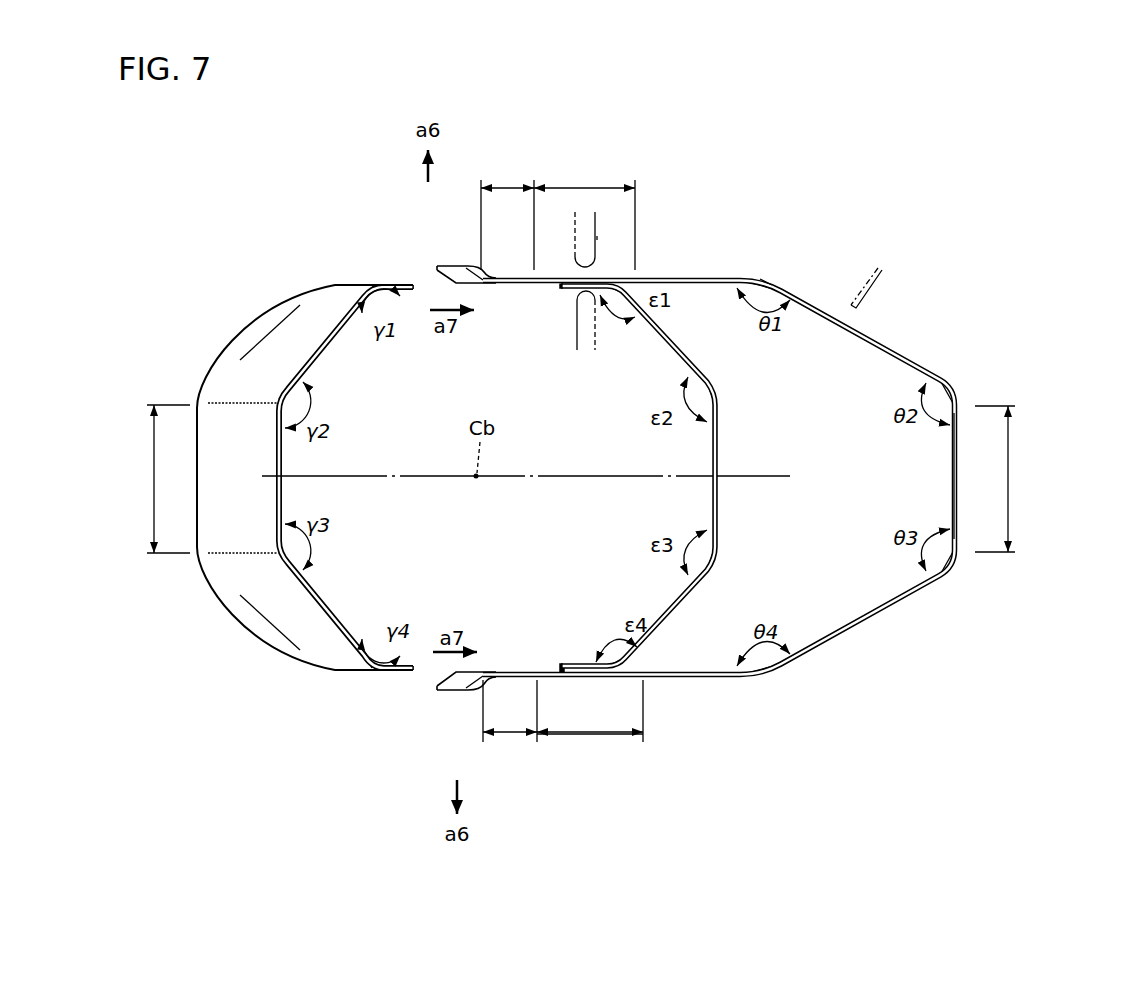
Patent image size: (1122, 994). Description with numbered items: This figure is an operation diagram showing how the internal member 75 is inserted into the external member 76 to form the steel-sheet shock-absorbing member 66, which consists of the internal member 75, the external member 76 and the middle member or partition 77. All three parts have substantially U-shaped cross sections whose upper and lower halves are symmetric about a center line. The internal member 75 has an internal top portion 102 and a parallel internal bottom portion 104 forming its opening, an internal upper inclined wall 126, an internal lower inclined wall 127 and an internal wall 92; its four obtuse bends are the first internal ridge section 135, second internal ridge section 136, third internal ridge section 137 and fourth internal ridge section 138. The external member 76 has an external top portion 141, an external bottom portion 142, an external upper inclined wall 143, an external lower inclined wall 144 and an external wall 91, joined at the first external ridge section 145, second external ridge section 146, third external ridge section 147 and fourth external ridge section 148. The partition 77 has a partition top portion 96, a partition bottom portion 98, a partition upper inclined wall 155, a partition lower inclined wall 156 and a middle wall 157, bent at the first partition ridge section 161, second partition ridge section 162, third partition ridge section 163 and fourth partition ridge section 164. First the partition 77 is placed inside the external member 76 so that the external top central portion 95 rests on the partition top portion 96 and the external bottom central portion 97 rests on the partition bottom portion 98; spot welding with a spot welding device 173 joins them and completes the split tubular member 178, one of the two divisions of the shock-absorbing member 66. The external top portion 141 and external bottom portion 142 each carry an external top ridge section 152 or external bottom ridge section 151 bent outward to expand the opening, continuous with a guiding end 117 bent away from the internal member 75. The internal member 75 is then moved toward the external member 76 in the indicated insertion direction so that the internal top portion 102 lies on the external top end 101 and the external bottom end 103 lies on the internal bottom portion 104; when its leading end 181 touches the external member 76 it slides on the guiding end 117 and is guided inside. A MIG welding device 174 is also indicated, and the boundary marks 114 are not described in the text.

The shock-absorbing member 66 is at (833, 108).
The internal member 75 is at (260, 330).
The external member 76 is at (718, 283).
The partition 77 is at (718, 440).
The external wall 91 is at (1011, 477).
The internal wall 92 is at (152, 478).
The external top central portion 95 is at (581, 188).
The partition top portion 96 is at (571, 300).
The external bottom central portion 97 is at (588, 734).
The partition bottom portion 98 is at (590, 665).
The external top end 101 is at (505, 188).
The internal top portion 102 is at (390, 283).
The external bottom end 103 is at (504, 734).
The internal bottom portion 104 is at (398, 672).
The boundary line 114 is at (247, 401).
The guiding end 117 is at (456, 268).
The internal upper inclined wall 126 is at (292, 330).
The internal lower inclined wall 127 is at (287, 617).
The first internal ridge section 135 is at (347, 287).
The second internal ridge section 136 is at (288, 410).
The third internal ridge section 137 is at (288, 532).
The fourth internal ridge section 138 is at (366, 646).
The external top portion 141 is at (687, 277).
The external bottom portion 142 is at (695, 680).
The external upper inclined wall 143 is at (887, 348).
The external lower inclined wall 144 is at (878, 617).
The first external ridge section 145 is at (762, 280).
The second external ridge section 146 is at (953, 392).
The third external ridge section 147 is at (955, 562).
The fourth external ridge section 148 is at (778, 679).
The external bottom ridge section 151 is at (470, 672).
The external top ridge section 152 is at (476, 284).
The partition upper inclined wall 155 is at (691, 352).
The partition lower inclined wall 156 is at (683, 608).
The middle wall 157 is at (718, 506).
The first partition ridge section 161 is at (604, 296).
The second partition ridge section 162 is at (718, 388).
The third partition ridge section 163 is at (718, 562).
The fourth partition ridge section 164 is at (622, 665).
The spot welding device 173 is at (598, 238).
The metal inert gas (MIG) welding device 174 is at (872, 270).
The split tubular member 178 is at (866, 146).
The leading end 181 is at (413, 284).